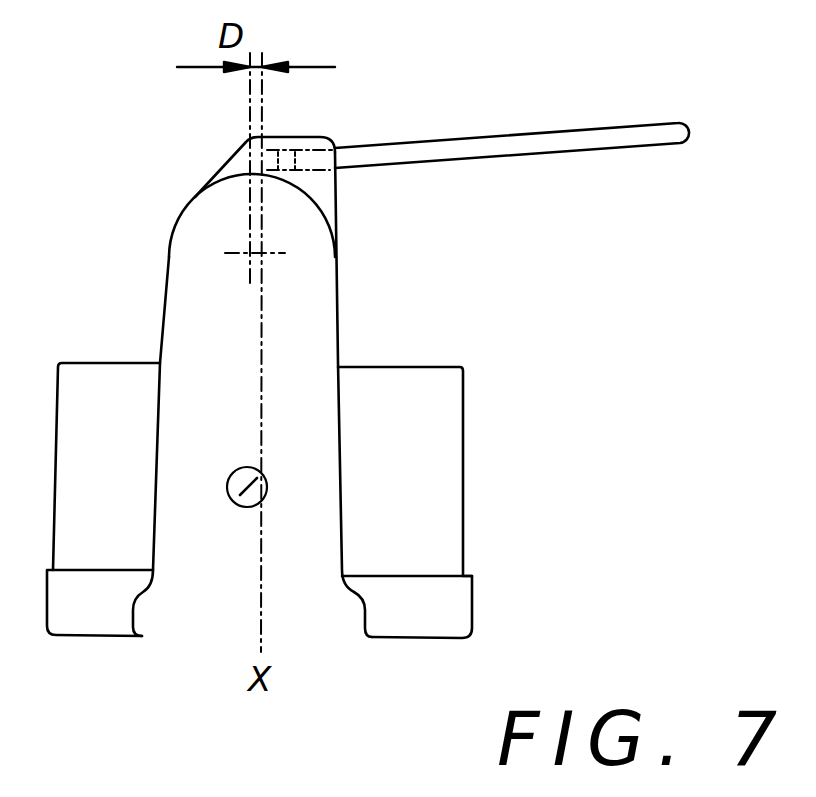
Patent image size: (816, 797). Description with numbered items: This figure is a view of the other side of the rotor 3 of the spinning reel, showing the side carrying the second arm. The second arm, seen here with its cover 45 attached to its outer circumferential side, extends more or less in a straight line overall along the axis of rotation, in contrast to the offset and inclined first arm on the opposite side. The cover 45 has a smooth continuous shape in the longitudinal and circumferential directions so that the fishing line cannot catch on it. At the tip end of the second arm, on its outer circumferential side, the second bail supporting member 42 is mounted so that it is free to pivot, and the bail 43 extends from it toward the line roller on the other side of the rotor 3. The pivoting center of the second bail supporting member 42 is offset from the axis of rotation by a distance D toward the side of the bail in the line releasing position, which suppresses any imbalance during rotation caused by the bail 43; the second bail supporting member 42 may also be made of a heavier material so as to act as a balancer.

The rotor 3 is at (463, 417).
The second bail supporting member 42 is at (242, 168).
The bail 43 is at (582, 138).
The cover 45 is at (320, 305).